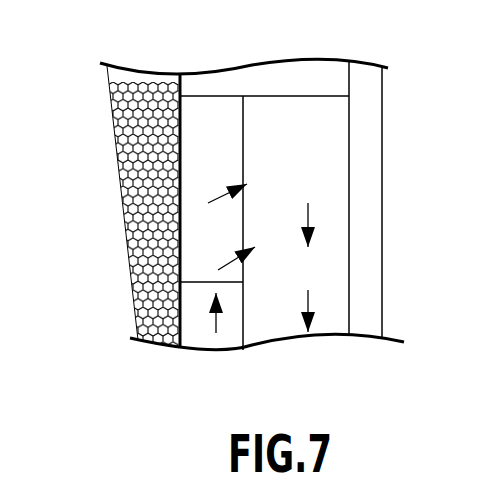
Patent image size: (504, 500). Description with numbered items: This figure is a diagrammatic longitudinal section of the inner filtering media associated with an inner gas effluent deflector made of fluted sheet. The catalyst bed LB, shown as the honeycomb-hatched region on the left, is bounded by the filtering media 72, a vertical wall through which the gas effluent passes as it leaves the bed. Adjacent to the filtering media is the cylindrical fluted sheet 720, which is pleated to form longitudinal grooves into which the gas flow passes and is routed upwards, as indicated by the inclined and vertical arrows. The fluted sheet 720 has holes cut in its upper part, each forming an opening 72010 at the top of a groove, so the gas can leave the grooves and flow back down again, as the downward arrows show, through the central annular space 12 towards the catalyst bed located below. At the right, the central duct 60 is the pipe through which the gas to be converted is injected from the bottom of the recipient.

The central annular space 12 is at (277, 293).
The central duct 60 is at (359, 145).
The filtering media 72 is at (183, 329).
The fluted sheet 720 is at (210, 328).
The opening 72010 is at (218, 117).
The catalyst bed LB is at (128, 113).